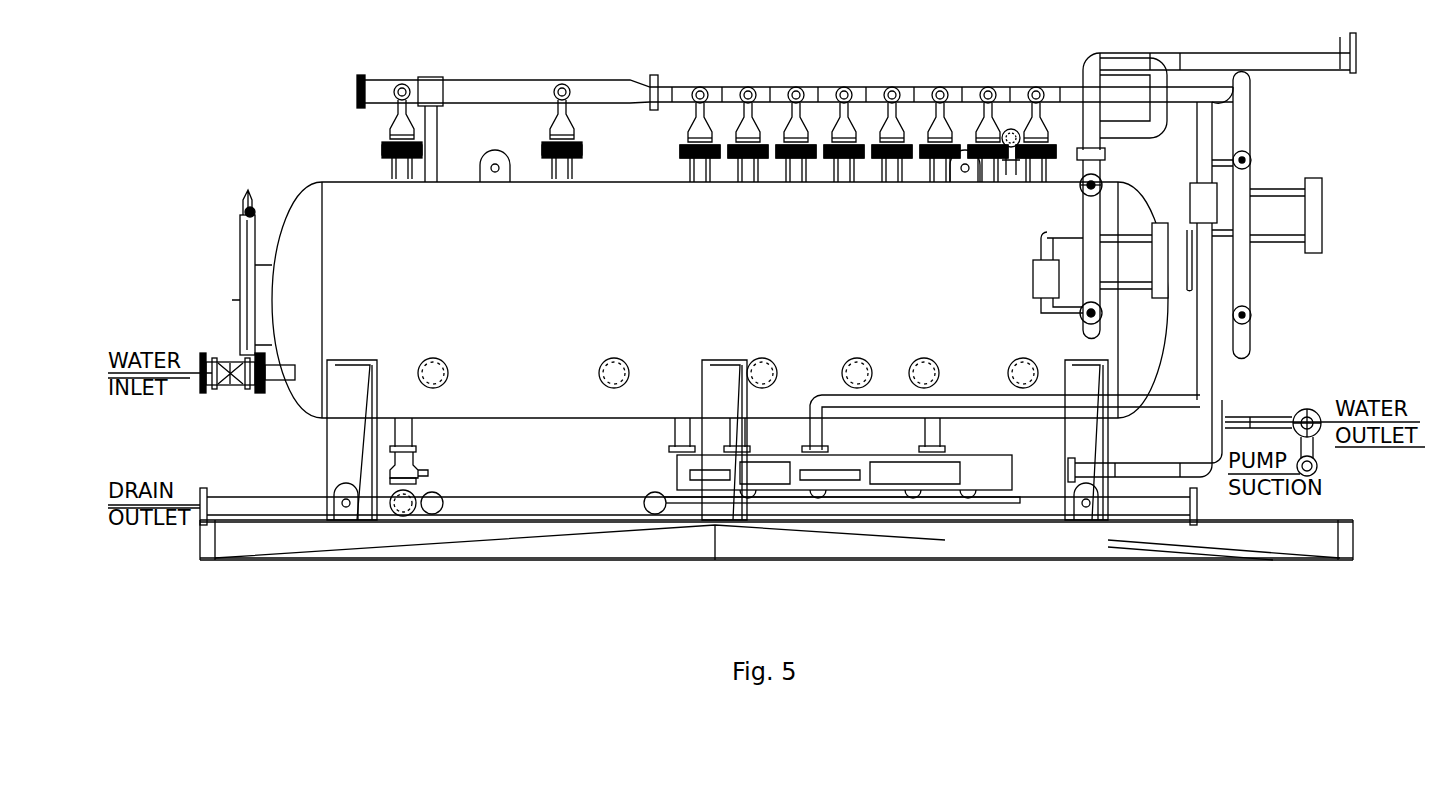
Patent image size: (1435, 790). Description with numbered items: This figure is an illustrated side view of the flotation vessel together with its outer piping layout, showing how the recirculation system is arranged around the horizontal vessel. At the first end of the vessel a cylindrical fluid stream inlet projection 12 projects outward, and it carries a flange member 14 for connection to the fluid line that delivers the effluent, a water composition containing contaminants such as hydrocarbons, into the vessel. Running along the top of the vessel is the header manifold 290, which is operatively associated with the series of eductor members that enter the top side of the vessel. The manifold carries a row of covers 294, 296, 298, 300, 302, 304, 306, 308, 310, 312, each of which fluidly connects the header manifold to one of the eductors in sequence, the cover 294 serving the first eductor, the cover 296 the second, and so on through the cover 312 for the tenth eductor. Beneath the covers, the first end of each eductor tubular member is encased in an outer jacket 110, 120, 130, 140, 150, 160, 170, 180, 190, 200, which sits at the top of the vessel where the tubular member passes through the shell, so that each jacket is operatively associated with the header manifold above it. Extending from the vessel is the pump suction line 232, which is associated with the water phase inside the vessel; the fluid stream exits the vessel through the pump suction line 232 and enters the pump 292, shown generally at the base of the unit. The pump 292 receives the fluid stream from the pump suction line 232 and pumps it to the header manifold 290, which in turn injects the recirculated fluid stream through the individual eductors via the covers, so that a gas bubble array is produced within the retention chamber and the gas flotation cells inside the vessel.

The fluid stream inlet projection 12 is at (300, 395).
The flange member 14 is at (262, 393).
The outer jacket 110 is at (385, 175).
The outer jacket 120 is at (575, 175).
The outer jacket 130 is at (686, 180).
The outer jacket 140 is at (728, 180).
The outer jacket 150 is at (776, 180).
The outer jacket 160 is at (824, 180).
The outer jacket 170 is at (872, 180).
The outer jacket 180 is at (920, 180).
The outer jacket 190 is at (965, 180).
The outer jacket 200 is at (1035, 180).
The pump suction line 232 is at (1205, 440).
The header manifold 290 is at (660, 85).
The pump 292 is at (776, 540).
The cover 294 is at (388, 138).
The cover 296 is at (548, 138).
The cover 298 is at (684, 120).
The cover 300 is at (745, 120).
The cover 302 is at (782, 120).
The cover 304 is at (842, 120).
The cover 306 is at (878, 120).
The cover 308 is at (940, 120).
The cover 310 is at (975, 120).
The cover 312 is at (1030, 125).